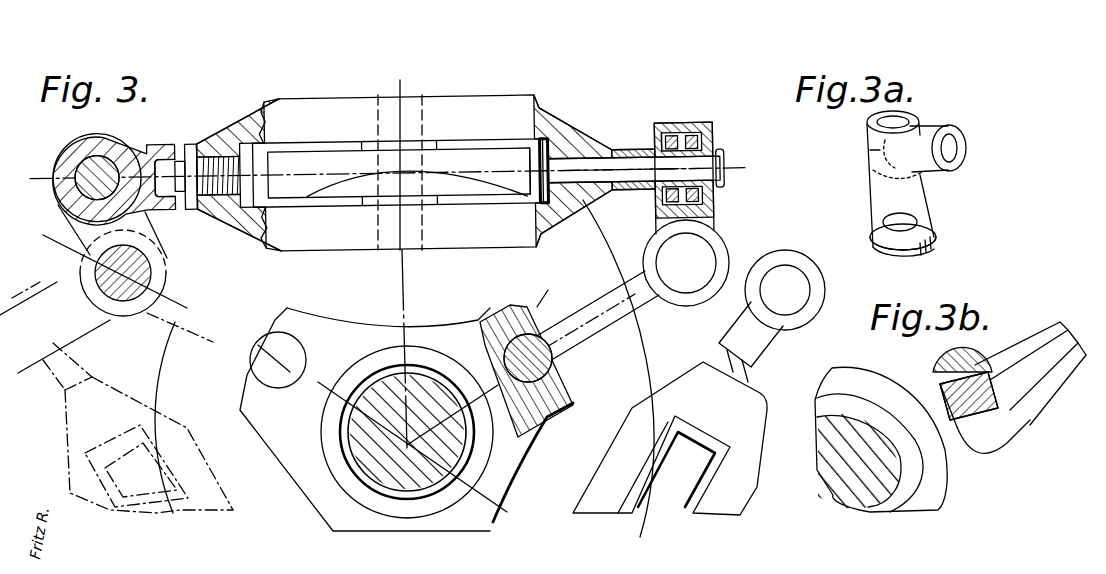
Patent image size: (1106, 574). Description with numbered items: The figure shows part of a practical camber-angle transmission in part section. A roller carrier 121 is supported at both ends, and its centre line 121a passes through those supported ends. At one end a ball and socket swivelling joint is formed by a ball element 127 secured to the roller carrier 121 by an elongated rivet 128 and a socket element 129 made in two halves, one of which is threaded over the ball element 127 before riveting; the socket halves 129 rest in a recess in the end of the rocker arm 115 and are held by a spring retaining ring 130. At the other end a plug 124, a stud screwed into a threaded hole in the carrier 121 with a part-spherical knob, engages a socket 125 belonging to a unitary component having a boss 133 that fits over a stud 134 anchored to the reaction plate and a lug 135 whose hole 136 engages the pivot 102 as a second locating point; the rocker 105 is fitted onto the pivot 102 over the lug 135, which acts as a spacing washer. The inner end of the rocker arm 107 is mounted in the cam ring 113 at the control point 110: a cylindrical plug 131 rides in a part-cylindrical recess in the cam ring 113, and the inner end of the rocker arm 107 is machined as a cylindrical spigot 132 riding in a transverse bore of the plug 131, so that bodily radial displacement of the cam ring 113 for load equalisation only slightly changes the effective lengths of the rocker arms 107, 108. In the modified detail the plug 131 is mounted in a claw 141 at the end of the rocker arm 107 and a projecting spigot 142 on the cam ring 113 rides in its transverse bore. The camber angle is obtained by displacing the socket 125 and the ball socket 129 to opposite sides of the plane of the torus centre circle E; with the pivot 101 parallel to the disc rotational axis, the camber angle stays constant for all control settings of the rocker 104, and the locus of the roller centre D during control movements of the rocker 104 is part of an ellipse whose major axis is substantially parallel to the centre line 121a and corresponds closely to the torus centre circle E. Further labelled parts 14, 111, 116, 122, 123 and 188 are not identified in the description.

In FIG. 3, the hub 14 is at (490, 527).
In FIG. 3B, the hub 14 is at (840, 448).
In FIG. 3, the pivot 101 is at (660, 265).
In FIG. 3, the pivot 102 is at (133, 263).
In FIG. 3, the rocker 104 is at (665, 310).
In FIG. 3, the rocker 105 is at (149, 413).
In FIG. 3, the rocker arm 107 is at (640, 340).
In FIG. 3B, the rocker arm 107 is at (1033, 362).
In FIG. 3, the rocker arm 108 is at (247, 333).
In FIG. 3, the control point 110 is at (530, 330).
In FIG. 3, the lug 111 is at (270, 377).
In FIG. 3, the cam ring 113 is at (493, 493).
In FIG. 3B, the cam ring 113 is at (933, 485).
In FIG. 3, the rocker arm 115 is at (703, 222).
In FIG. 3, the arm (phantom) 116 is at (65, 285).
In FIG. 3, the roller carrier 121 is at (600, 157).
In FIG. 3, the centre line of the roller carrier 121a is at (520, 168).
In FIG. 3, the rod 122 is at (307, 167).
In FIG. 3, the center plane 123 is at (405, 107).
In FIG. 3, the plug 124 is at (165, 163).
In FIG. 3, the socket 125 is at (150, 155).
In FIG. 3A, the socket 125 is at (923, 140).
In FIG. 3, the ball element 127 is at (724, 180).
In FIG. 3, the elongated rivet 128 is at (570, 160).
In FIG. 3, the socket element 129 is at (712, 138).
In FIG. 3, the spring retaining ring 130 is at (664, 134).
In FIG. 3, the cylindrical plug 131 is at (551, 362).
In FIG. 3B, the cylindrical plug 131 is at (998, 408).
In FIG. 3, the cylindrical spigot 132 is at (567, 387).
In FIG. 3, the boss 133 is at (57, 193).
In FIG. 3A, the boss 133 is at (878, 153).
In FIG. 3, the stud 134 is at (92, 165).
In FIG. 3, the lug 135 is at (130, 220).
In FIG. 3A, the lug 135 is at (915, 197).
In FIG. 3A, the hole 136 is at (893, 222).
In FIG. 3B, the claw 141 is at (967, 358).
In FIG. 3B, the projecting spigot 142 is at (935, 392).
In FIG. 3, the nut 188 is at (706, 126).
In FIG. 3, the roller centre D is at (402, 168).
In FIG. 3, the torus centre circle E is at (580, 247).